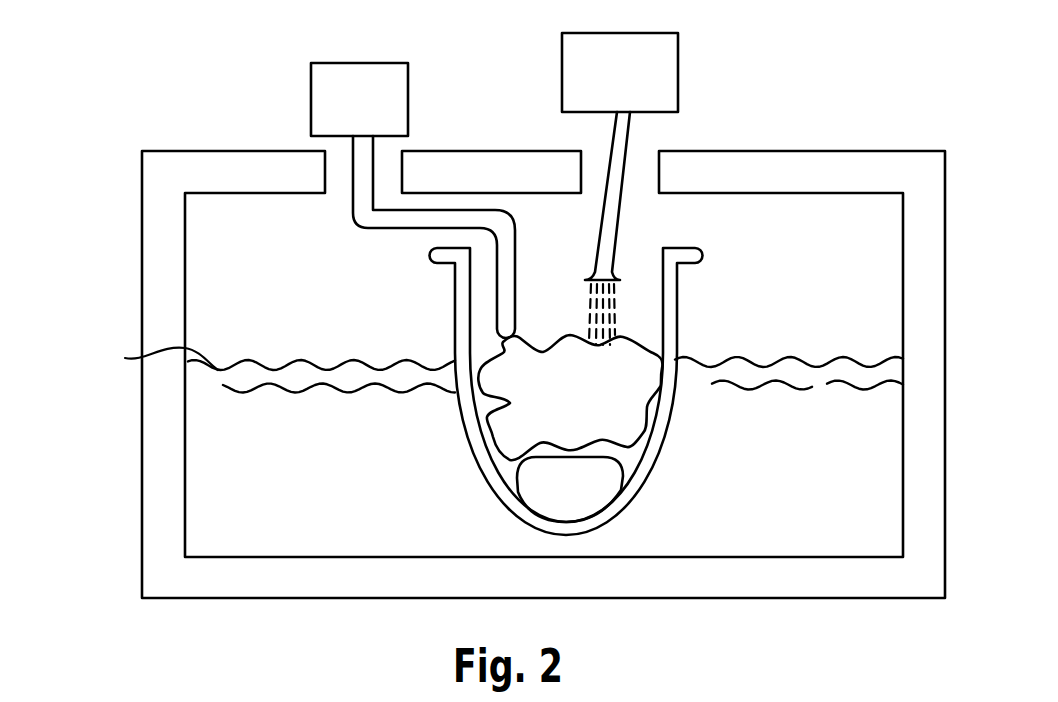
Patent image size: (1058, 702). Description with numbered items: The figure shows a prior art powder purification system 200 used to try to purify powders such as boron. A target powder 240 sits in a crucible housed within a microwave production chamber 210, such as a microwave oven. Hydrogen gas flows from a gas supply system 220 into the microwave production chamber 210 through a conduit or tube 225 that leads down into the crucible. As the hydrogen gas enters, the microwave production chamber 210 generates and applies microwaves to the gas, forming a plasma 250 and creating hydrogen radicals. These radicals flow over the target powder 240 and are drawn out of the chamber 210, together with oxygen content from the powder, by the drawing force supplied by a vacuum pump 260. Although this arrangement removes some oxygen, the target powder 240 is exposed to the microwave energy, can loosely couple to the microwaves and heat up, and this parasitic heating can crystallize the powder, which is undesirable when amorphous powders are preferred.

The system 200 is at (151, 42).
The microwave production chamber 210 is at (850, 587).
The gas supply system 220 is at (402, 98).
The conduit or tube 225 is at (360, 228).
The target powder 240 is at (590, 502).
The plasma 250 is at (598, 406).
The vacuum pump 260 is at (673, 68).